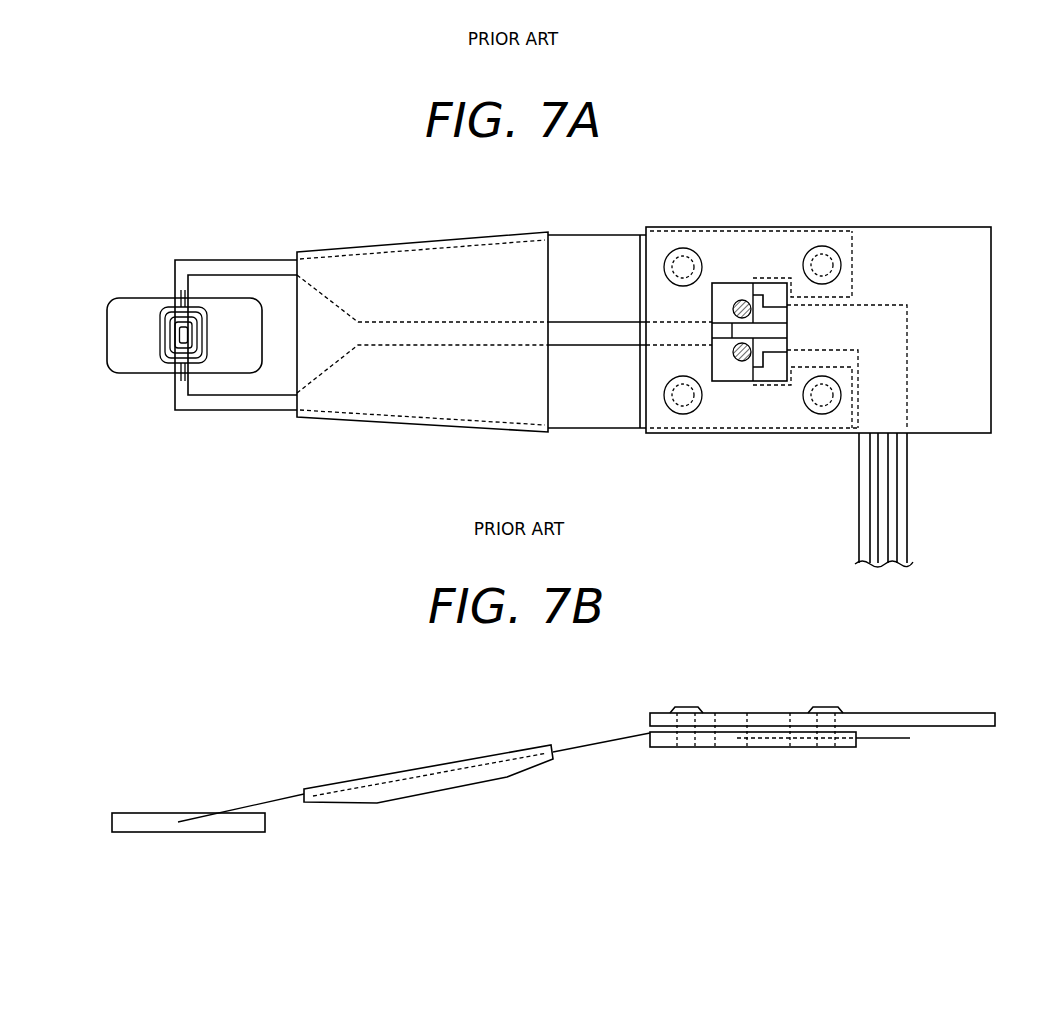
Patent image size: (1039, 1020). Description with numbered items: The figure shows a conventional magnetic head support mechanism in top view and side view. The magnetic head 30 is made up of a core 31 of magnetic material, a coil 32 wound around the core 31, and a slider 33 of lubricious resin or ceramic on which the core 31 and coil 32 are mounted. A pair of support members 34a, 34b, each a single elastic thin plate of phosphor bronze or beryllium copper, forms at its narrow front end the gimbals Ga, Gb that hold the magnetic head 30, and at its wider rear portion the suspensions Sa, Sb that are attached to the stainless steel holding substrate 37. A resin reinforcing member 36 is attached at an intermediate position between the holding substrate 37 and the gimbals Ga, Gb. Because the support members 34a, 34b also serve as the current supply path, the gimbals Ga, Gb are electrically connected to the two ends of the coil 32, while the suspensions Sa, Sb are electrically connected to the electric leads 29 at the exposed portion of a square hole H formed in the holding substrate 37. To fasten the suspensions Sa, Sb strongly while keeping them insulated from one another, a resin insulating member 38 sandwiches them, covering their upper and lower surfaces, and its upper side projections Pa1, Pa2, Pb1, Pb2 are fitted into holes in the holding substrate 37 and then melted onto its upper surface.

In FIG. 7A, the electric leads 29 is at (770, 313).
In FIG. 7B, the electric leads 29 is at (888, 740).
In FIG. 7A, the magnetic head 30 is at (153, 393).
In FIG. 7B, the magnetic head 30 is at (135, 818).
In FIG. 7A, the core 31 is at (175, 352).
In FIG. 7A, the coil 32 is at (163, 330).
In FIG. 7A, the slider 33 is at (116, 349).
In FIG. 7A, the support member 34a is at (565, 395).
In FIG. 7B, the support member 34a is at (593, 745).
In FIG. 7A, the support member 34b is at (565, 268).
In FIG. 7A, the reinforcing member 36 is at (358, 408).
In FIG. 7B, the reinforcing member 36 is at (423, 783).
In FIG. 7A, the holding substrate 37 is at (947, 250).
In FIG. 7B, the holding substrate 37 is at (953, 718).
In FIG. 7B, the insulating member 38 is at (673, 740).
In FIG. 7A, the square hole H is at (773, 372).
In FIG. 7A, the projection Pa1 is at (683, 398).
In FIG. 7B, the projection Pa1 is at (685, 707).
In FIG. 7A, the projection Pa2 is at (822, 398).
In FIG. 7B, the projection Pa2 is at (828, 707).
In FIG. 7A, the projection Pb1 is at (683, 265).
In FIG. 7A, the projection Pb2 is at (823, 262).
In FIG. 7A, the gimbal Ga is at (297, 428).
In FIG. 7B, the gimbal Ga is at (298, 758).
In FIG. 7A, the gimbal Gb is at (297, 242).
In FIG. 7A, the suspension Sa is at (548, 473).
In FIG. 7B, the suspension Sa is at (553, 786).
In FIG. 7A, the suspension Sb is at (548, 190).